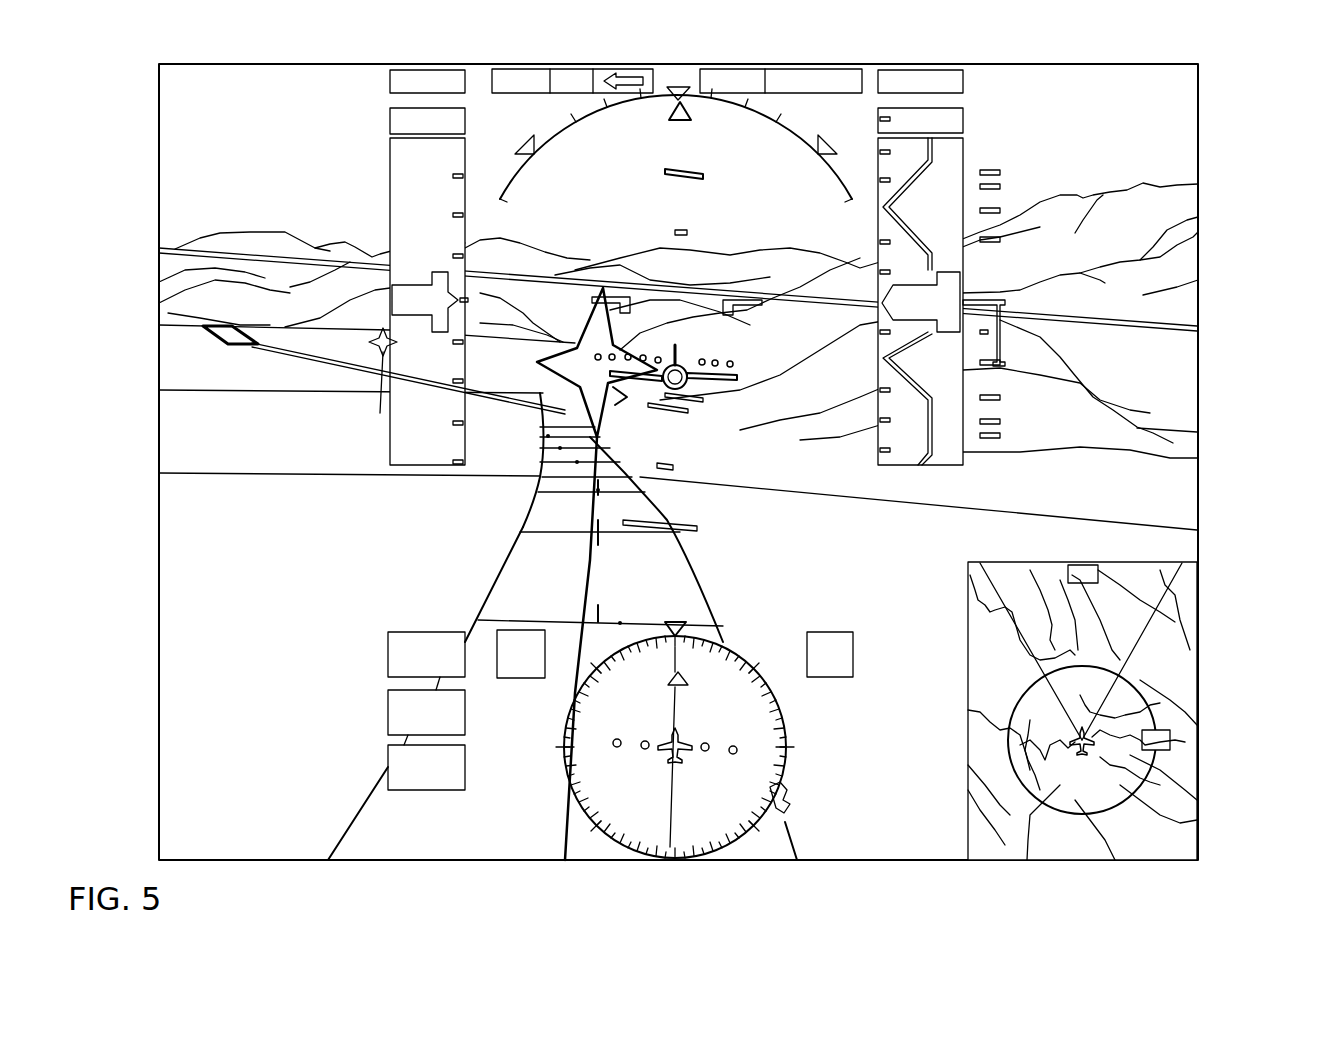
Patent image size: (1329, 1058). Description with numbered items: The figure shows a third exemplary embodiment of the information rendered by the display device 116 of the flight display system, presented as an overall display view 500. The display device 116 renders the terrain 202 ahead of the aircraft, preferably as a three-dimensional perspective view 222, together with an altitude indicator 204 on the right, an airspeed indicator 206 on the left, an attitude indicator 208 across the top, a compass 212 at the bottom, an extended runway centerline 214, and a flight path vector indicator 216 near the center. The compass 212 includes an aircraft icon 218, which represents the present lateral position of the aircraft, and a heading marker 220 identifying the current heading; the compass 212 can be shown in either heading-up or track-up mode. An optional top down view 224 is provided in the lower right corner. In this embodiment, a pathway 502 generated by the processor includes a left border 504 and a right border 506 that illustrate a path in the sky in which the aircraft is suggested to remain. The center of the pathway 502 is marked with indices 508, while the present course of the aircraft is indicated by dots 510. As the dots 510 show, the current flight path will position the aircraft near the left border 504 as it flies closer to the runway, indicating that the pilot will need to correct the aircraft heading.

The display device 116 is at (124, 855).
The flight display view 500 is at (1268, 124).
The terrain 202 is at (232, 234).
The altitude indicator 204 is at (963, 152).
The airspeed indicator 206 is at (390, 196).
The attitude indicator 208 is at (562, 146).
The compass 212 is at (672, 860).
The extended runway centerline 214 is at (237, 343).
The flight path vector indicator 216 is at (688, 355).
The aircraft icon 218 is at (684, 743).
The heading marker 220 is at (672, 620).
The three-dimensional perspective view 222 is at (1206, 258).
The top down view 224 is at (1208, 682).
The pathway 502 is at (538, 490).
The left border 504 is at (525, 528).
The right border 506 is at (703, 585).
The indices 508 is at (598, 610).
The dots 510 is at (598, 545).